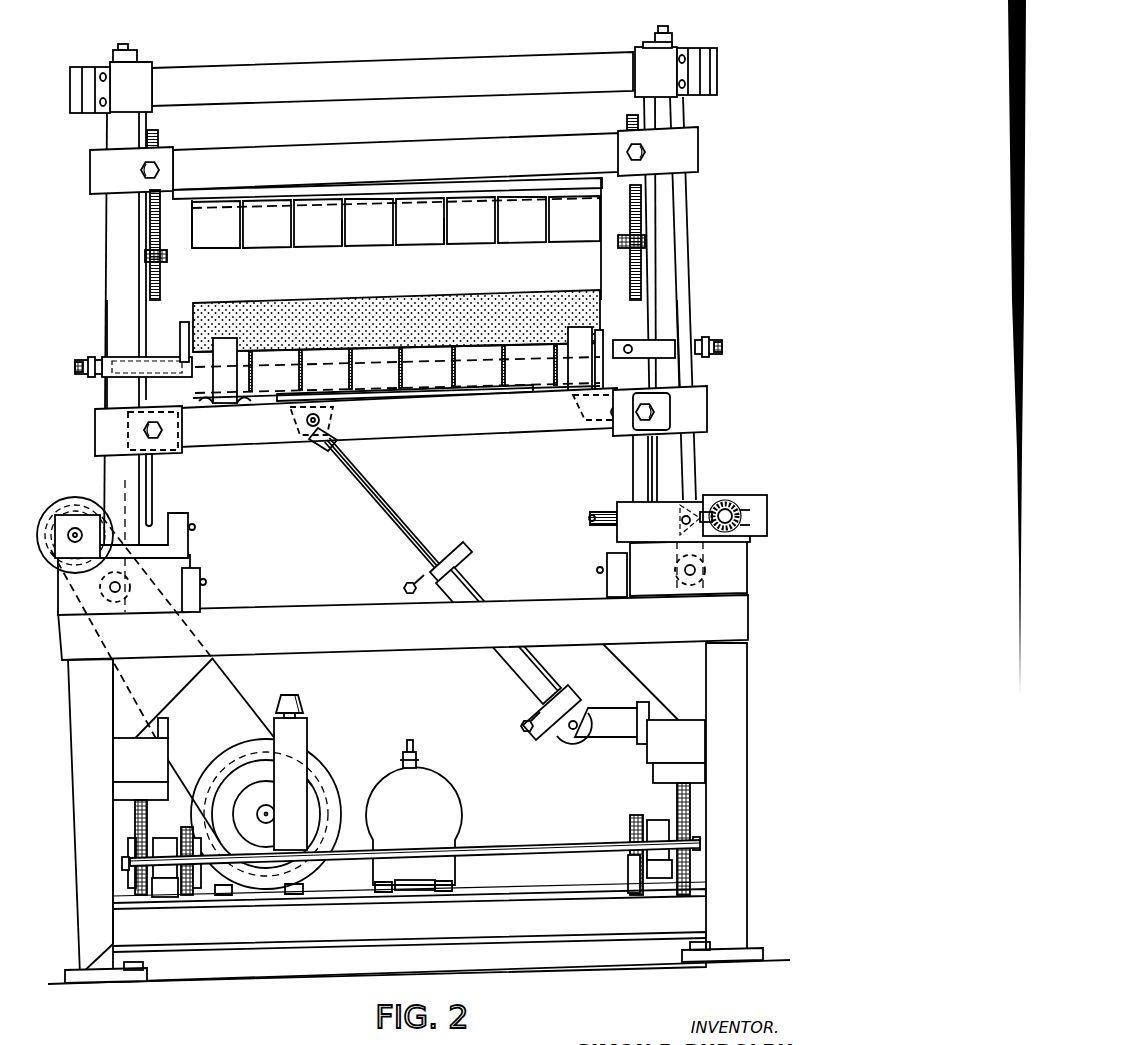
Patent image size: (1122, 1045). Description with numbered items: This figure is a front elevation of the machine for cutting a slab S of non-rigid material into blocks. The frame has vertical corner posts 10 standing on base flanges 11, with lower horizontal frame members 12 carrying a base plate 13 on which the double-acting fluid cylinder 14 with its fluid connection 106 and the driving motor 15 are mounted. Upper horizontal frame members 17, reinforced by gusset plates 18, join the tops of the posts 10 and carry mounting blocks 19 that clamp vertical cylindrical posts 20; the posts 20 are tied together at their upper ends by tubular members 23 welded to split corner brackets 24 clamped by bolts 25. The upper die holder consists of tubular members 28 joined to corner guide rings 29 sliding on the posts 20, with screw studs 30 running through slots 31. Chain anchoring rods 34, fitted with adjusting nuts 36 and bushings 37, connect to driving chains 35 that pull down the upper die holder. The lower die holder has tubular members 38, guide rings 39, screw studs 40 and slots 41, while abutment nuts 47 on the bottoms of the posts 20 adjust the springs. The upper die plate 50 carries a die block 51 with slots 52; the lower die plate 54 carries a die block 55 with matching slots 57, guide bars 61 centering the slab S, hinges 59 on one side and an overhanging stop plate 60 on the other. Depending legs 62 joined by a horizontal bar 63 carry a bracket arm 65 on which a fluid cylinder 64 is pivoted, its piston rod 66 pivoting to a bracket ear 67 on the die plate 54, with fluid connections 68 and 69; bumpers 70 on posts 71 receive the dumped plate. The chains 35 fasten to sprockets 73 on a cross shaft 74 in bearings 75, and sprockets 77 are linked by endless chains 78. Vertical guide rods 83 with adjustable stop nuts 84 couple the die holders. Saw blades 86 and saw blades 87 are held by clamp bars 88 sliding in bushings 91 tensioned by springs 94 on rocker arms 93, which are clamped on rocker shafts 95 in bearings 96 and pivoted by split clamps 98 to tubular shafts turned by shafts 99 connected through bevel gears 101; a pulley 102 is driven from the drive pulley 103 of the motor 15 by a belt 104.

The vertical corner posts 10 is at (70, 876).
The base flanges 11 is at (100, 978).
The horizontal frame members 12 is at (334, 934).
The base plate 13 is at (523, 886).
The double-acting fluid cylinder 14 is at (438, 784).
The driving motor 15 is at (318, 772).
The horizontal frame members 17 is at (368, 646).
The gusset plates 18 is at (173, 692).
The mounting blocks 19 is at (58, 605).
The vertical tubes or cylindrical posts 20 is at (107, 312).
The horizontal tubular members 23 is at (430, 72).
The split corner brackets 24 is at (138, 70).
The bolts 25 is at (98, 76).
The horizontal tubular members 28 is at (352, 158).
The corner guide rings 29 is at (90, 171).
The screw studs 30 is at (141, 171).
The slots 31 is at (657, 275).
The chain anchoring rods 34 is at (124, 44).
The driving chains 35 is at (135, 822).
The adjusting nuts 36 is at (132, 52).
The bushings 37 is at (110, 62).
The horizontal tubular members 38 is at (506, 426).
The corner guide rings 39 is at (95, 427).
The screw studs 40 is at (145, 428).
The slots 41 is at (153, 478).
The abutment nuts 47 is at (128, 768).
The die plate 50 is at (430, 185).
The die block 51 is at (372, 198).
The slots 52 is at (346, 242).
The die plate 54 is at (262, 408).
The die block 55 is at (415, 398).
The slots 57 is at (352, 396).
The hinges 59 is at (600, 422).
The stop plate 60 is at (390, 390).
The guide bars 61 is at (224, 340).
The vertical legs 62 is at (633, 478).
The horizontal bar 63 is at (640, 740).
The fluid cylinder 64 is at (500, 670).
The bracket arm 65 is at (603, 732).
The piston rod 66 is at (378, 500).
The bracket ear 67 is at (298, 440).
The pressure fluid connection 68 is at (404, 586).
The pressure fluid connection 69 is at (536, 733).
The bumpers 70 is at (302, 699).
The posts 71 is at (300, 787).
The sprockets 73 is at (133, 848).
The cross shaft 74 is at (512, 850).
The bearings 75 is at (166, 890).
The sprockets 77 is at (198, 892).
The endless chains 78 is at (183, 840).
The vertical guide rods 83 is at (150, 220).
The adjustable stop nuts 84 is at (145, 257).
The saw blades 86 is at (367, 390).
The saw blades 87 is at (185, 345).
The clamp bar 88 is at (172, 360).
The bushing 91 is at (86, 356).
The rocker arm 93 is at (105, 385).
The spring 94 is at (77, 373).
The rocker shaft 95 is at (118, 600).
The bearings 96 is at (197, 568).
The split clamps 98 is at (736, 494).
The shafts 99 is at (185, 526).
The bevel gears 101 is at (740, 507).
The pulley 102 is at (78, 502).
The drive pulley 103 is at (328, 808).
The belt 104 is at (228, 668).
The fluid connection 106 is at (414, 742).
The slab S is at (513, 300).